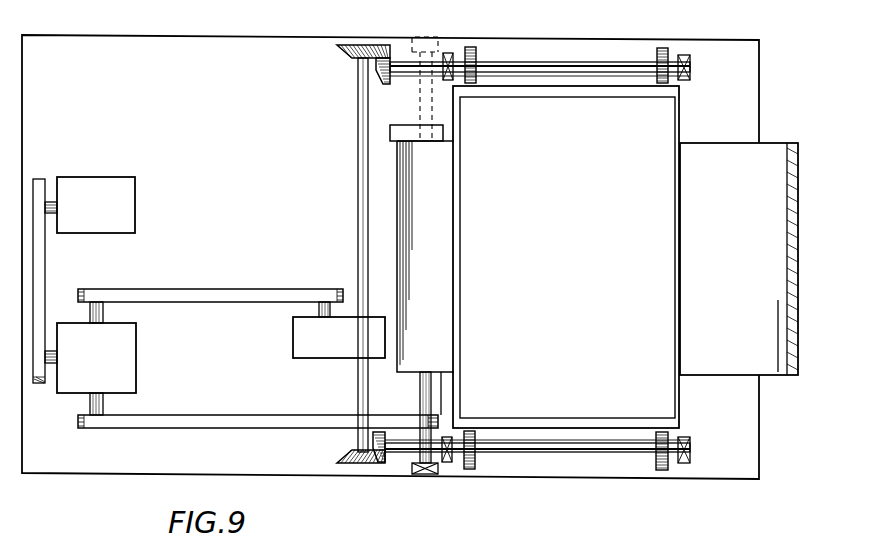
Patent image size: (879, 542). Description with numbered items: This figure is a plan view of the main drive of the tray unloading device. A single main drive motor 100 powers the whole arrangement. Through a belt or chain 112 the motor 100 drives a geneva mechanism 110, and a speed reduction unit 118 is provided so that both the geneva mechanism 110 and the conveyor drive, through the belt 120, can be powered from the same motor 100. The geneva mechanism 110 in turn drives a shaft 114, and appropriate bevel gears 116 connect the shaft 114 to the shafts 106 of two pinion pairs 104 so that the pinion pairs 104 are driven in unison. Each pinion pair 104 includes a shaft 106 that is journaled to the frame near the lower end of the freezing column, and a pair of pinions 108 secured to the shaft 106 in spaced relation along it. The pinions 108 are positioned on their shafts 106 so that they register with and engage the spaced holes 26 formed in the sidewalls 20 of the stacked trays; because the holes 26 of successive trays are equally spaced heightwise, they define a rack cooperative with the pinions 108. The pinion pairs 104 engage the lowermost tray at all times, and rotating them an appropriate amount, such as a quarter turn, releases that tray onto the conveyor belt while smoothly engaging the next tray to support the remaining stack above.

The sidewalls 20 is at (553, 92).
The spaced holes 26 is at (660, 541).
The motor 100 is at (97, 192).
The pinion pairs 104 is at (558, 59).
The shaft 106 is at (586, 76).
The pinions 108 is at (471, 86).
The geneva mechanism 110 is at (295, 340).
The belt or chain 112 is at (203, 292).
The shaft 114 is at (358, 162).
The bevel gears 116 is at (395, 462).
The speed reduction unit 118 is at (118, 356).
The belt 120 is at (200, 420).